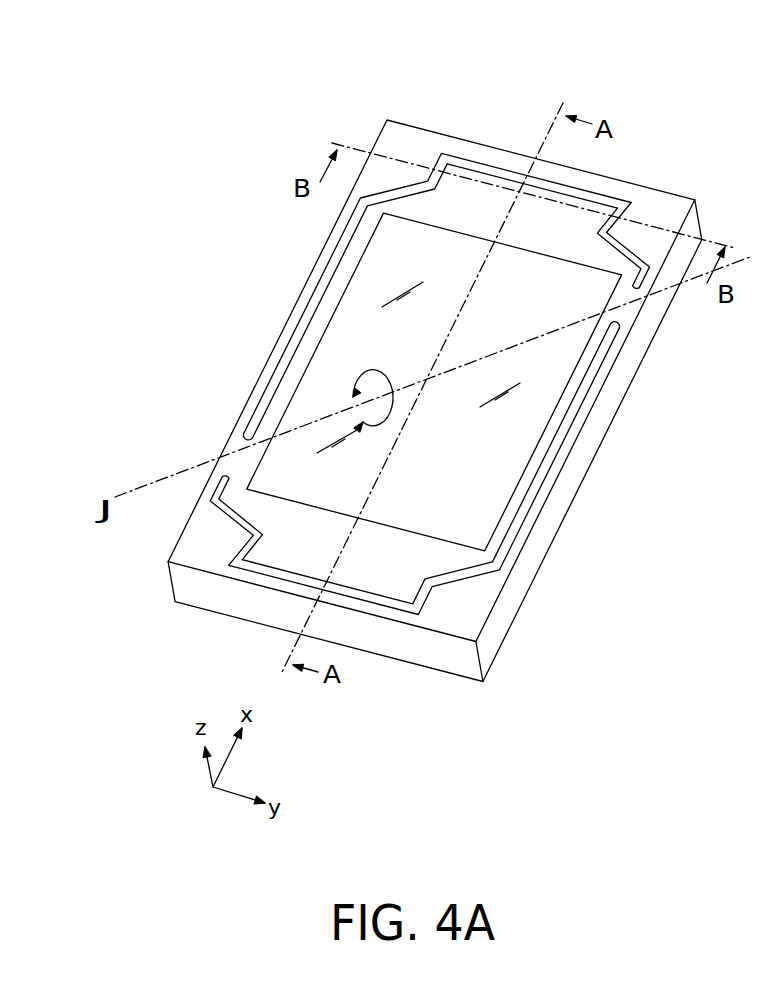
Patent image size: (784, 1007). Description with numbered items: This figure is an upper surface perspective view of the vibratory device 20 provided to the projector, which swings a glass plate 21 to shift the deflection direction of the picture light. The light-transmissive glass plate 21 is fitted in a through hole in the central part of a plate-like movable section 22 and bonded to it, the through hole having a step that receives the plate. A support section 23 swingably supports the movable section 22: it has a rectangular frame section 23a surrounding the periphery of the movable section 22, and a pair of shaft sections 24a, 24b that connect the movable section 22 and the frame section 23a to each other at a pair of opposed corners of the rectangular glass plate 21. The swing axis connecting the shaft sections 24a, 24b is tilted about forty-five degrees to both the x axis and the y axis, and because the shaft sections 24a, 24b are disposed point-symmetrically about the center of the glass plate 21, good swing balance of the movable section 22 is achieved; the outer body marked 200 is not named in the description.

The vibratory device 20 is at (400, 190).
The glass plate 21 is at (342, 330).
The movable section 22 is at (463, 187).
The support section 23 is at (500, 650).
The frame section 23a is at (213, 548).
The shaft section 24a is at (237, 450).
The shaft section 24b is at (630, 308).
The base body 200 is at (260, 374).